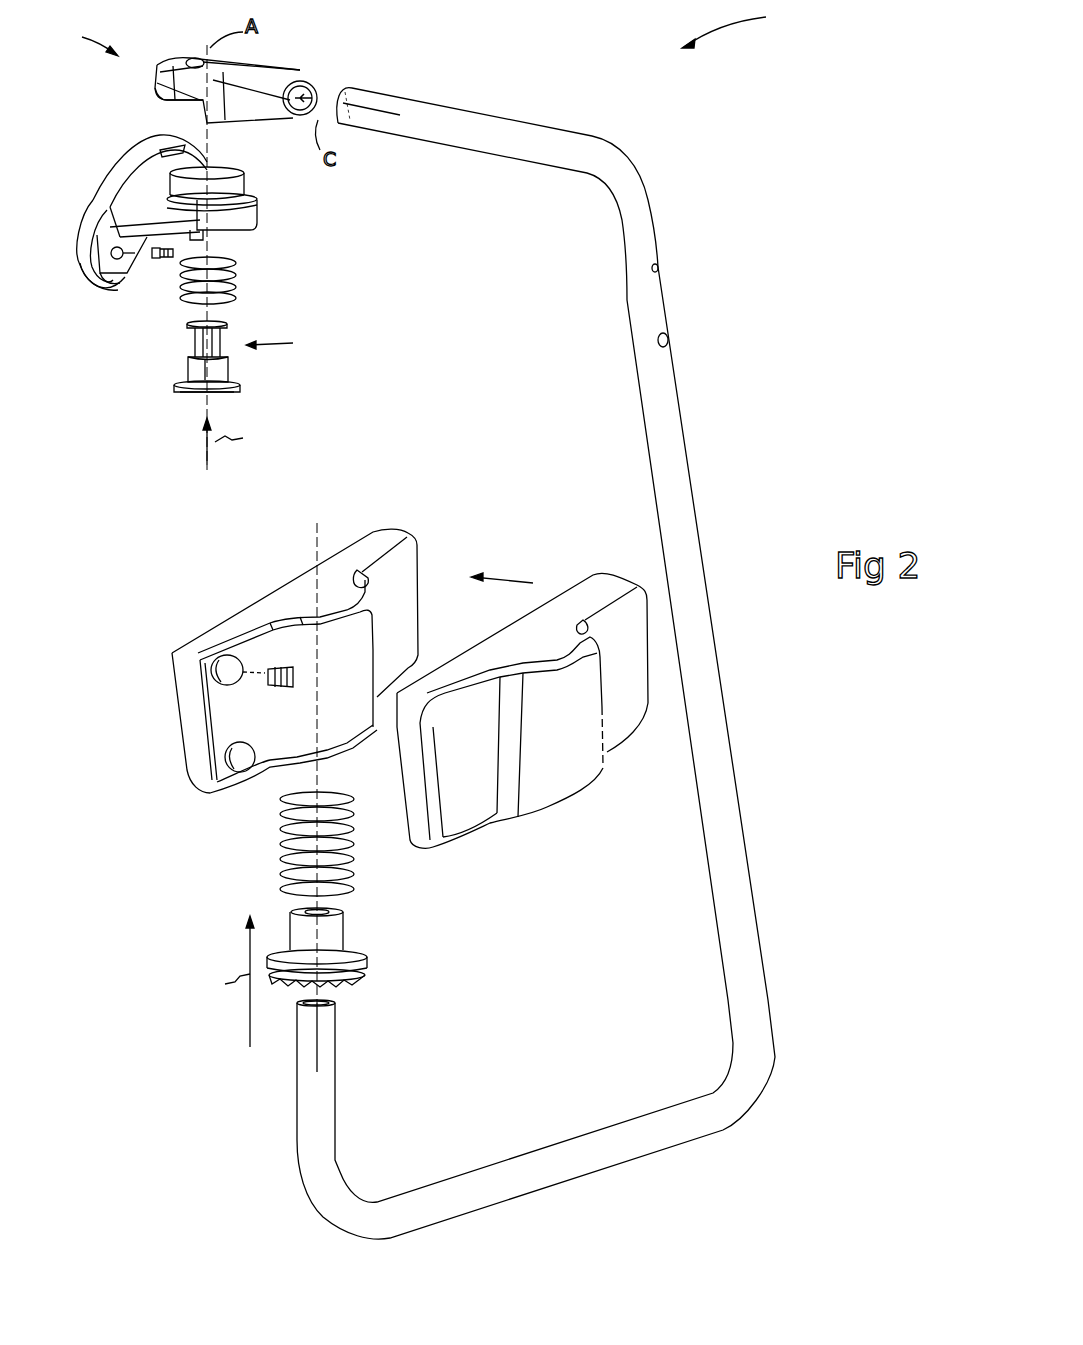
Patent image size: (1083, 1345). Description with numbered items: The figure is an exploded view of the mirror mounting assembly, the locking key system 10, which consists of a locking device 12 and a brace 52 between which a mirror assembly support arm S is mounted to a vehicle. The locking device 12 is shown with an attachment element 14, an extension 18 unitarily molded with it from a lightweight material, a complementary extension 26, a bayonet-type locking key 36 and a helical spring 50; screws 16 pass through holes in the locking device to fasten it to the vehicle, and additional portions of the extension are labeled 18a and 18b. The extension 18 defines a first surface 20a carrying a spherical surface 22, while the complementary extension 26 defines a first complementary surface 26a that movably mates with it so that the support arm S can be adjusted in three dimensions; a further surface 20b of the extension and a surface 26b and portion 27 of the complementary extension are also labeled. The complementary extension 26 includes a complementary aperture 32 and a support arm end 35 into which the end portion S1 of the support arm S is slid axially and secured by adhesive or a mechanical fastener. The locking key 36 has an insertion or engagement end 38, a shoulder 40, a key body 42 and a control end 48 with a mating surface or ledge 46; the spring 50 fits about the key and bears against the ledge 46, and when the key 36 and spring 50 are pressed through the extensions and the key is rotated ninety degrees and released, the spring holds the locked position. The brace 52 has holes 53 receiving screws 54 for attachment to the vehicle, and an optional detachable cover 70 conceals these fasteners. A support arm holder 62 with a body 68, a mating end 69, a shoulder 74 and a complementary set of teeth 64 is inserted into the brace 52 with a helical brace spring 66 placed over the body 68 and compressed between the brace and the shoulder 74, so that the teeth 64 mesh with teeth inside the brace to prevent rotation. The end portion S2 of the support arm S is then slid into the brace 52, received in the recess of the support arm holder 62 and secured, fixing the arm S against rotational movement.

The locking key system 10 is at (792, 34).
The locking device 12 is at (156, 245).
The attachment element 14 is at (80, 265).
The screws 16 is at (156, 260).
The extension 18 is at (140, 160).
The clamp body upper portion 18a is at (112, 182).
The clamp body boss 18b is at (262, 222).
The first surface 20a is at (262, 196).
The lower stub 20b is at (206, 241).
The spherical surface 22 is at (240, 180).
The complementary extension 26 is at (241, 111).
The first complementary surface 26a is at (185, 105).
The jaw ring end 26b is at (262, 66).
The jaw top surface 27 is at (225, 60).
The complementary aperture 32 is at (190, 57).
The support arm end 35 is at (320, 90).
The locking key 36 is at (284, 337).
The insertion end 38 is at (195, 322).
The bolt shank 40 is at (228, 335).
The key body 42 is at (192, 367).
The mating surface 46 is at (240, 382).
The control end 48 is at (185, 393).
The helical spring 50 is at (240, 276).
The brace 52 is at (408, 518).
The holes 53 is at (213, 683).
The screws 54 is at (268, 688).
The support arm holder 62 is at (370, 951).
The complementary set of teeth 64 is at (365, 978).
The helical brace spring 66 is at (347, 865).
The body 68 is at (335, 929).
The mating end 69 is at (325, 912).
The detachable cover 70 is at (570, 757).
The shoulder 74 is at (280, 937).
The support arm S is at (680, 403).
The end portion S1 is at (362, 88).
The end portion S2 is at (333, 1017).